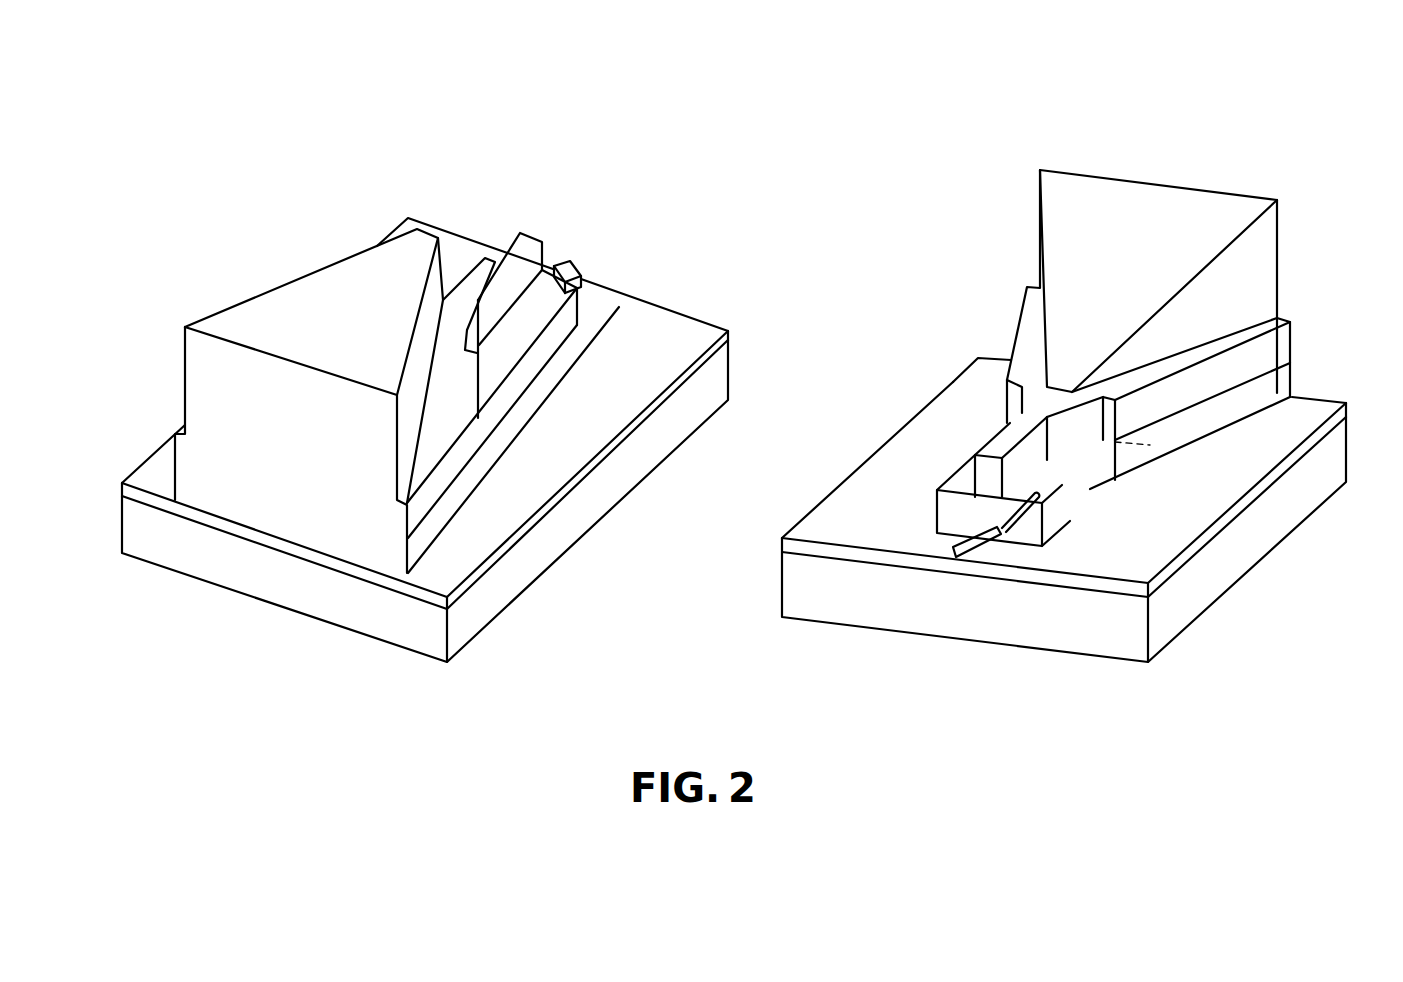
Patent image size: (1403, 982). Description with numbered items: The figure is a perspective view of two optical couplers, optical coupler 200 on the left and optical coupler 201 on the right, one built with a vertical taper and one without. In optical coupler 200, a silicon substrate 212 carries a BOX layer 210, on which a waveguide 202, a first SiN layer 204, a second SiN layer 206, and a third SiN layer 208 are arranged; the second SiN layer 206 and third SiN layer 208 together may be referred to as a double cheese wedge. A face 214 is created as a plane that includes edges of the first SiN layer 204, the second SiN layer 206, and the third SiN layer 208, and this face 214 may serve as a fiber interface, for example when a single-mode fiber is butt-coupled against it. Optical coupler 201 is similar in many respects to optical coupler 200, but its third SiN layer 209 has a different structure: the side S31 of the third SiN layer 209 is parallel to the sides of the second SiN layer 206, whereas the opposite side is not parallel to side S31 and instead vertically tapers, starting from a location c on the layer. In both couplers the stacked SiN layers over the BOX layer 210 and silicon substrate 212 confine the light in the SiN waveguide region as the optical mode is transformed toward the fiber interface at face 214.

The optical coupler 200 is at (570, 156).
The optical coupler 201 is at (1232, 136).
The waveguide 202 is at (580, 272).
The first SiN layer 204 is at (524, 363).
The second SiN layer 206 is at (508, 296).
The third SiN layer 208 is at (427, 343).
The third SiN layer 209 is at (1255, 270).
The BOX layer 210 is at (333, 563).
The silicon substrate 212 is at (367, 611).
The face 214 is at (210, 397).
The side of third SiN layer S31 is at (1230, 332).
The location c is at (1153, 447).